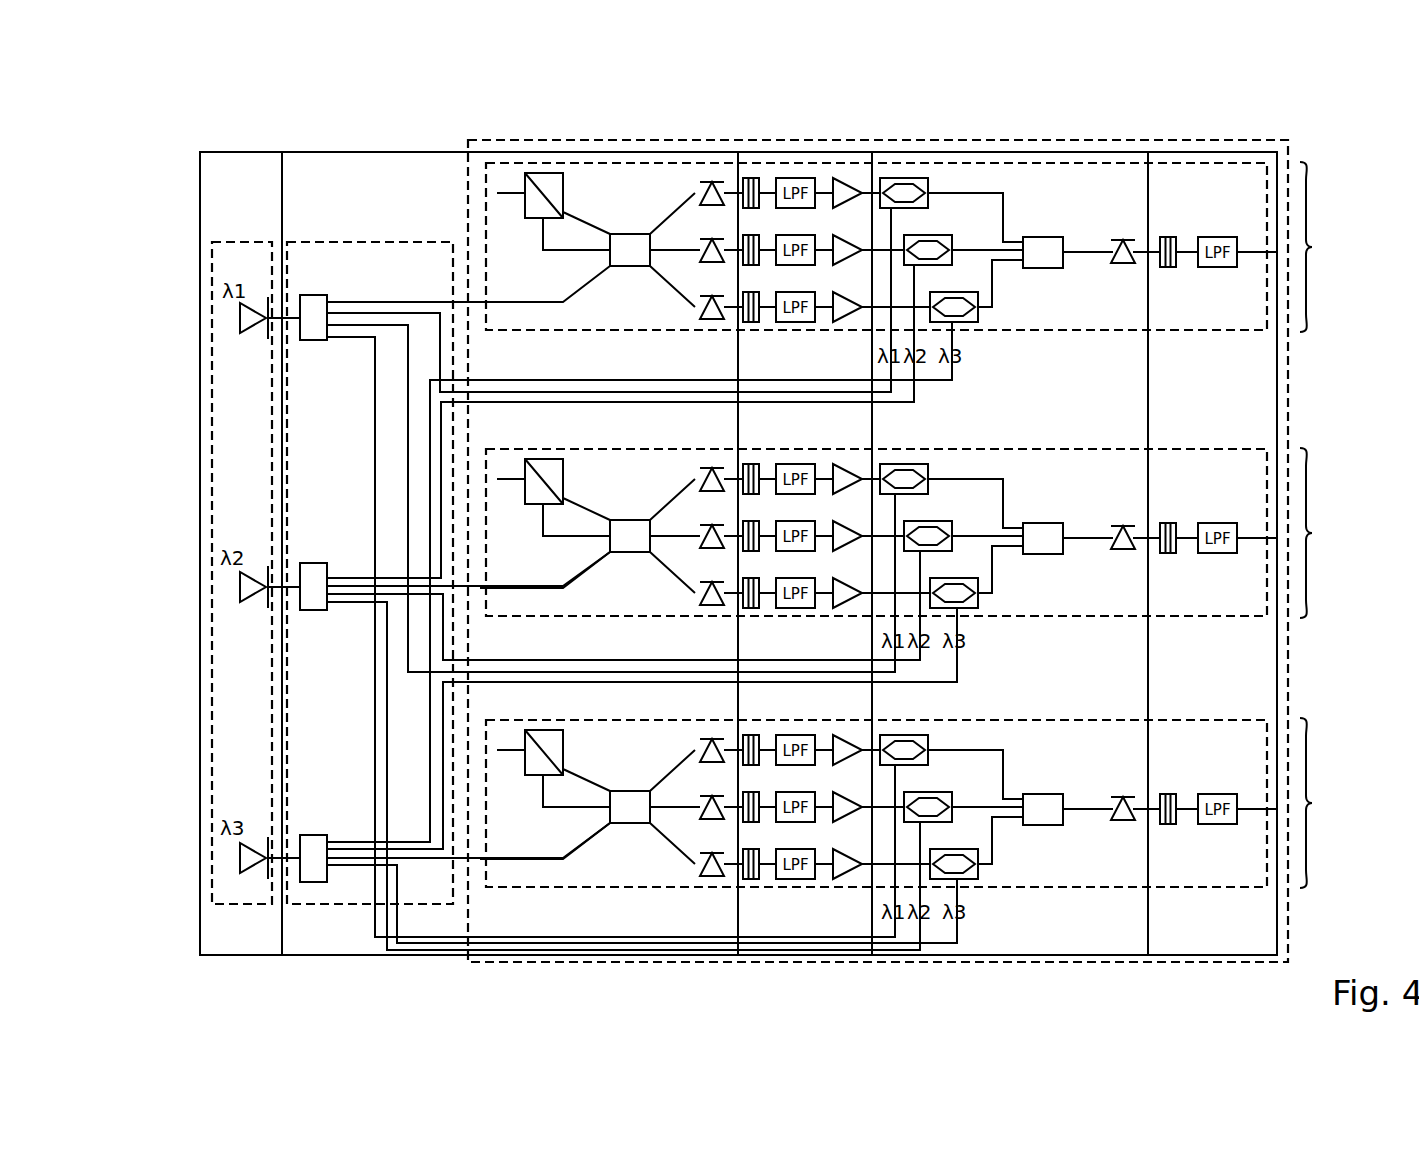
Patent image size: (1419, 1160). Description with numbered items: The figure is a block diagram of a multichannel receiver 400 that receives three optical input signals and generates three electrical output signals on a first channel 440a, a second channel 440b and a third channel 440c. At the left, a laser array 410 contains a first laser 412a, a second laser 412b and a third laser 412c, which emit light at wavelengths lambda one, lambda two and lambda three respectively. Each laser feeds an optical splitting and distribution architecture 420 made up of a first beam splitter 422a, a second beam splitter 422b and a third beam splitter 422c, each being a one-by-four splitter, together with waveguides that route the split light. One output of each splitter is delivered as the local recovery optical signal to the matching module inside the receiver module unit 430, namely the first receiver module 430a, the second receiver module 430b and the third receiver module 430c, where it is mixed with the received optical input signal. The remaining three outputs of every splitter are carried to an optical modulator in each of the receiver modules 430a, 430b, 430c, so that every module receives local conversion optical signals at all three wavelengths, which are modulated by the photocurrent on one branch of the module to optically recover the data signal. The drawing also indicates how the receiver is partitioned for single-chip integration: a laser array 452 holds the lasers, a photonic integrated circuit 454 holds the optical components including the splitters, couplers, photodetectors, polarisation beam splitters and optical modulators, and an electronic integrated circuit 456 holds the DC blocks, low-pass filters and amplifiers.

The multichannel receiver 400 is at (101, 157).
The laser array 410 is at (237, 241).
The first laser 412a is at (243, 318).
The second laser 412b is at (243, 587).
The third laser 412c is at (243, 858).
The optical splitting and distribution architecture 420 is at (355, 238).
The first beam splitter 422a is at (315, 295).
The second beam splitter 422b is at (310, 563).
The third beam splitter 422c is at (310, 835).
The receiver module unit 430 is at (530, 140).
The first receiver module 430a is at (1267, 185).
The second receiver module 430b is at (1225, 448).
The third receiver module 430c is at (1225, 718).
The first channel 440a is at (1340, 247).
The second channel 440b is at (1340, 533).
The third channel 440c is at (1339, 803).
The laser array 452 is at (237, 956).
The photonic integrated circuit 454 is at (1055, 918).
The electronic integrated circuit 456 is at (1185, 918).